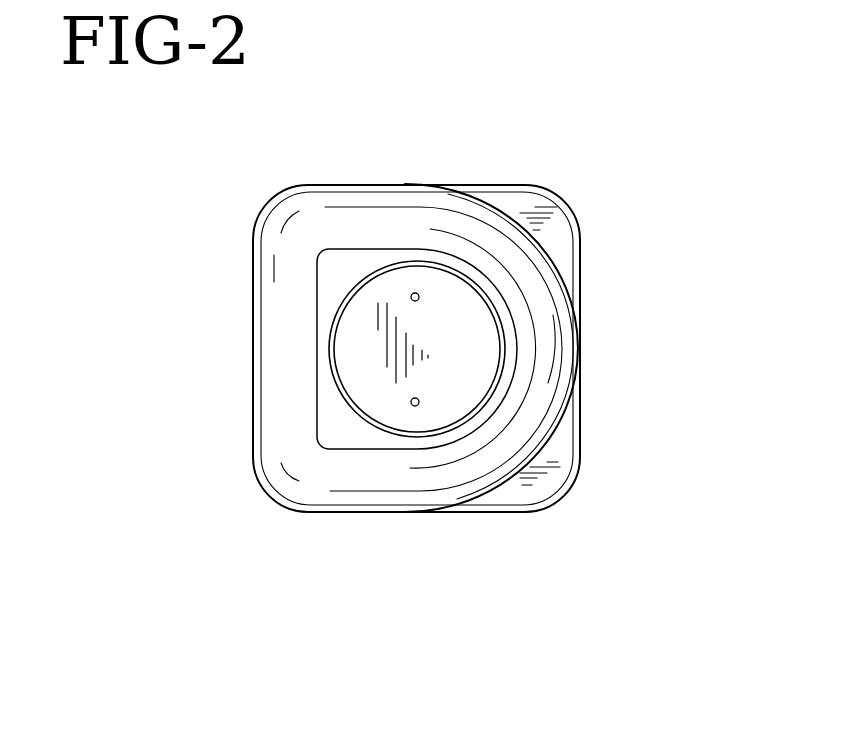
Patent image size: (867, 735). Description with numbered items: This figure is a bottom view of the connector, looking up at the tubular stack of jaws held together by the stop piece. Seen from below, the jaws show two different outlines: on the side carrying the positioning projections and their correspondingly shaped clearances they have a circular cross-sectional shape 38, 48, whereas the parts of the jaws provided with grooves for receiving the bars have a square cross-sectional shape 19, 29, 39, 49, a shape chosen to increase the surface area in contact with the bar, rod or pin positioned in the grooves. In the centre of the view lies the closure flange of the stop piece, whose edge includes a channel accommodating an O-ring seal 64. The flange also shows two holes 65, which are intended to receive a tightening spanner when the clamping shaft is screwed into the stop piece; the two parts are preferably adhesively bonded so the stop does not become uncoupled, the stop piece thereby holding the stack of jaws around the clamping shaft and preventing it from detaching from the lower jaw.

The square cross-sectional shape 49 is at (332, 320).
The square cross-sectional shape 39 is at (264, 212).
The square cross-sectional shape 29 is at (464, 262).
The square cross-sectional shape 19 is at (527, 186).
The circular cross-sectional shape 38 is at (597, 348).
The circular cross-sectional shape 48 is at (550, 252).
The O-ring seal 64 is at (378, 428).
The holes 65 is at (417, 405).